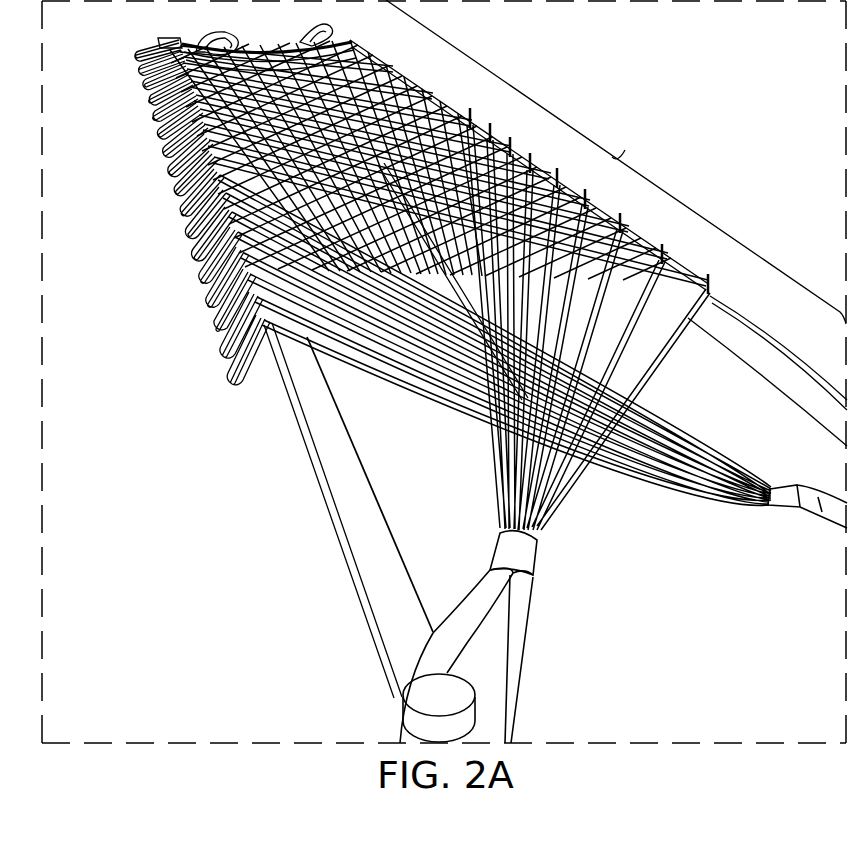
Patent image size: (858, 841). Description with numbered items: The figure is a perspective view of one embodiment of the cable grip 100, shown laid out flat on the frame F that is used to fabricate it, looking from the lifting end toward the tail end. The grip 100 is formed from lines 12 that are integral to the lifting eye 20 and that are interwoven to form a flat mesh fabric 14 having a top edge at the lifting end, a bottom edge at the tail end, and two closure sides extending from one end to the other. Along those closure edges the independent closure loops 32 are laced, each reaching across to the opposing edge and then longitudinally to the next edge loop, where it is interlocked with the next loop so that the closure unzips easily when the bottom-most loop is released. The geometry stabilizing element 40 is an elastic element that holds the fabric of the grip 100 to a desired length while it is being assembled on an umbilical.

The cable grip 100 is at (616, 162).
The flat mesh fabric 14 is at (368, 47).
The lines 12 is at (370, 378).
The geometry stabilizing element 40 is at (432, 257).
The closure loops 32 is at (226, 343).
The frame F is at (340, 490).
The lifting eye 20 is at (512, 635).